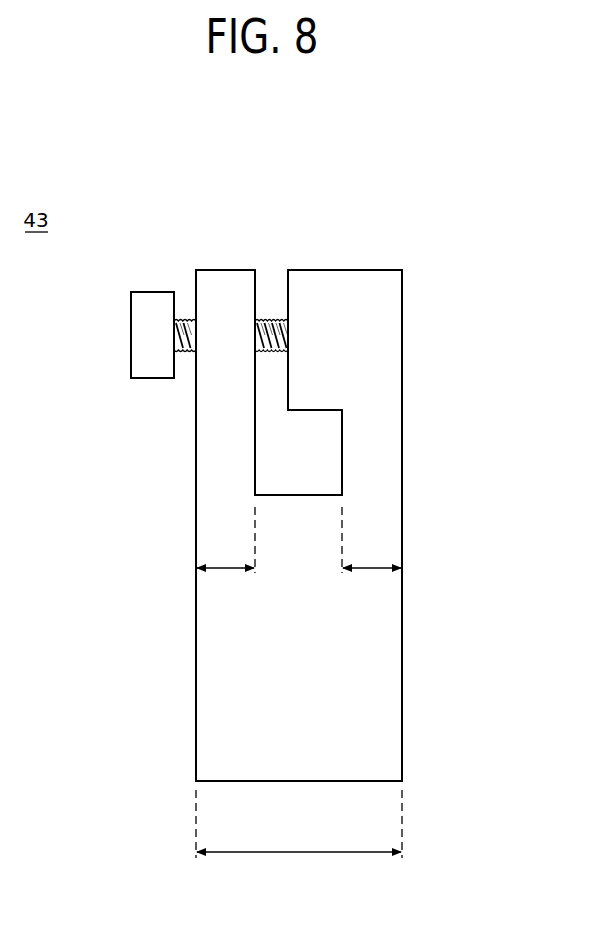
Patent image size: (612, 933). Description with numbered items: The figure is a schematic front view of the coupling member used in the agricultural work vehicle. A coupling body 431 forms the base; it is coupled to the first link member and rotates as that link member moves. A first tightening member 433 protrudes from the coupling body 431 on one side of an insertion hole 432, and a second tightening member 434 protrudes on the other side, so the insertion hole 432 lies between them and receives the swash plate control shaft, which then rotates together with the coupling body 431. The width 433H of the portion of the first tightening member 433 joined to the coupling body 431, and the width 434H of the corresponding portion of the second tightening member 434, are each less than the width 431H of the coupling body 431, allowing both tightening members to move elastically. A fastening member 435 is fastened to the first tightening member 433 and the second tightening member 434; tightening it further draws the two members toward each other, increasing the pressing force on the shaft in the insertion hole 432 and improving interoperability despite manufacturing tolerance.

The coupling body 431 is at (367, 677).
The insertion hole 432 is at (311, 445).
The first tightening member 433 is at (230, 443).
The second tightening member 434 is at (368, 349).
The fastening member 435 is at (158, 343).
The width of the coupling body 431H is at (299, 835).
The width of the first tightening member 433H is at (226, 551).
The width of the second tightening member 434H is at (371, 551).